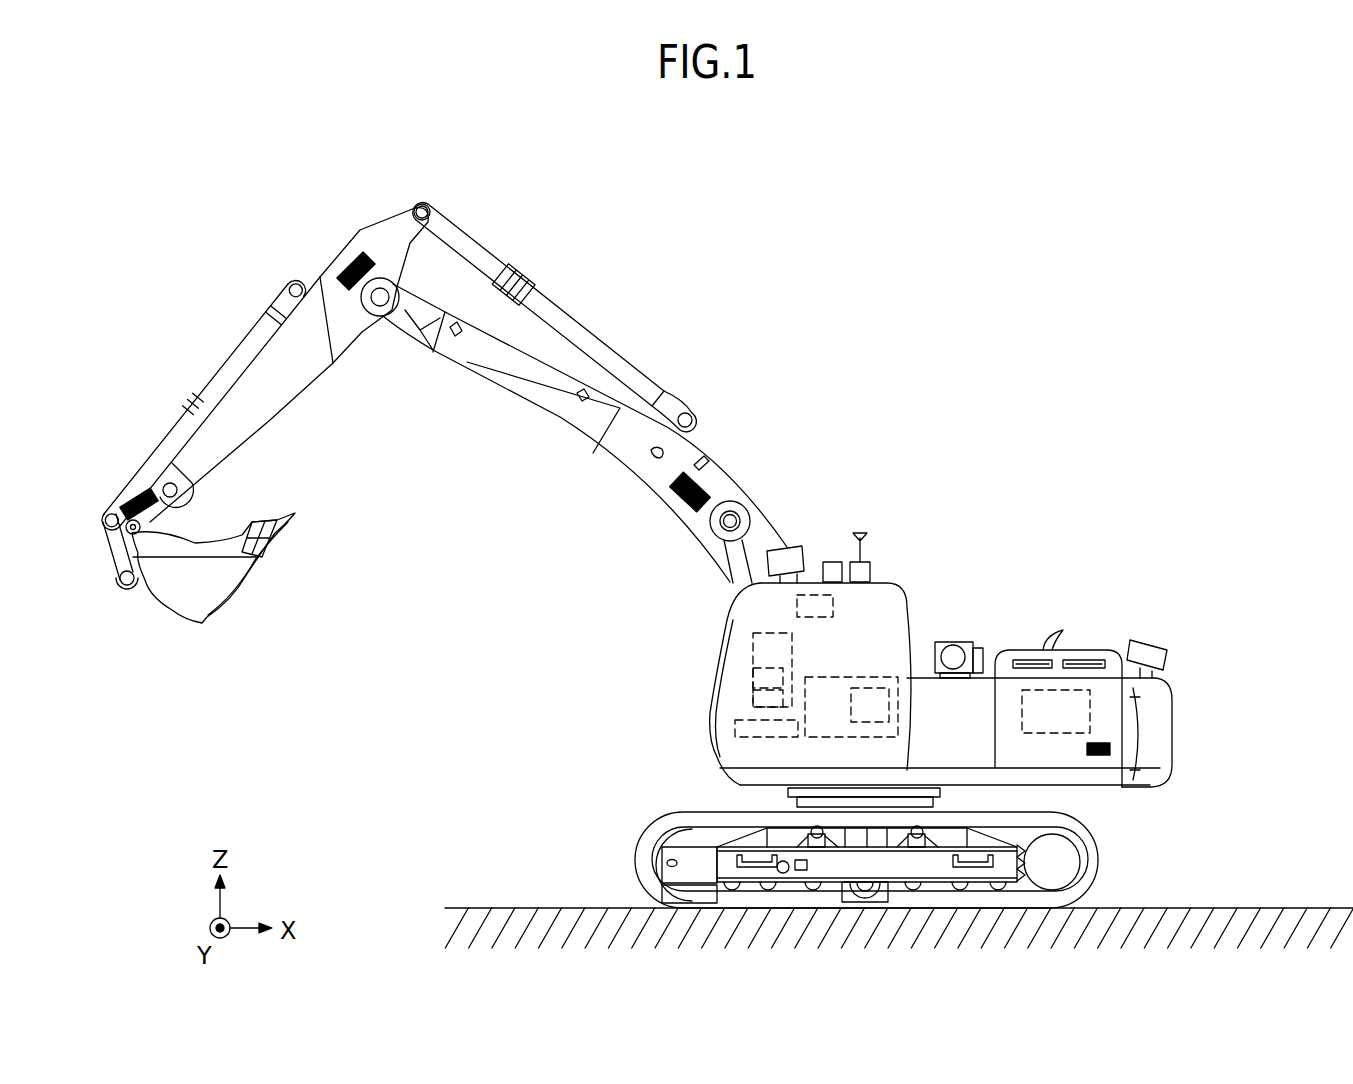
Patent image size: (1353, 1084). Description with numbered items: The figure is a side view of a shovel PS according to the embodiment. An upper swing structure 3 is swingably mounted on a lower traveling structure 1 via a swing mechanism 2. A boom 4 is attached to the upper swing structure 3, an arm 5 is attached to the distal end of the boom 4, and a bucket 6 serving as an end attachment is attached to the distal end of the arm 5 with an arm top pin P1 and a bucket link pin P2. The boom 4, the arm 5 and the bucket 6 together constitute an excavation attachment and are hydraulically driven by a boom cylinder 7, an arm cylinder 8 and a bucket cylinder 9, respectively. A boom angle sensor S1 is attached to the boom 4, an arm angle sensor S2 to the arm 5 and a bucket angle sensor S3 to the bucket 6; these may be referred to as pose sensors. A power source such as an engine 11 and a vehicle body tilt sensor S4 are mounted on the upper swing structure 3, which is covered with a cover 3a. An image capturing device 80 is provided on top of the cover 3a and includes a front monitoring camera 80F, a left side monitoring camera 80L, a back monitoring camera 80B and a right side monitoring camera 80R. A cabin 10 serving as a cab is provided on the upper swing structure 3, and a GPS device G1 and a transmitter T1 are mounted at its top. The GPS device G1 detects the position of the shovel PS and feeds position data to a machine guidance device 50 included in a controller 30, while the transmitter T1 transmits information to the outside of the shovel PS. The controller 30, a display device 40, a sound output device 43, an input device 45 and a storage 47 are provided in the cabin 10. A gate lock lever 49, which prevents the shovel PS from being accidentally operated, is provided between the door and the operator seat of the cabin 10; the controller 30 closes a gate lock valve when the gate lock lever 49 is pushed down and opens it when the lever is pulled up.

The lower traveling structure 1 is at (635, 858).
The swing mechanism 2 is at (945, 800).
The upper swing structure 3 is at (929, 613).
The cover 3a is at (1157, 697).
The boom 4 is at (628, 472).
The arm 5 is at (297, 378).
The bucket 6 is at (172, 598).
The boom cylinder 7 is at (740, 560).
The arm cylinder 8 is at (618, 358).
The bucket cylinder 9 is at (232, 363).
The cabin 10 is at (887, 578).
The engine 11 is at (1090, 717).
The controller 30 is at (833, 735).
The display device 40 is at (753, 653).
The sound output device 43 is at (813, 593).
The input device 45 is at (753, 675).
The storage 47 is at (753, 695).
The gate lock lever 49 is at (735, 725).
The machine guidance device 50 is at (870, 677).
The image capturing device 80 is at (1157, 570).
The front monitoring camera 80F is at (780, 547).
The back monitoring camera 80B is at (1150, 640).
The left side monitoring camera 80L is at (980, 647).
The right side monitoring camera 80R is at (953, 642).
The boom angle sensor S1 is at (700, 480).
The arm angle sensor S2 is at (343, 262).
The bucket angle sensor S3 is at (133, 493).
The vehicle body tilt sensor S4 is at (1110, 749).
The transmitter T1 is at (833, 560).
The GPS device (GNSS receiver) G1 is at (868, 556).
The arm top pin P1 is at (130, 530).
The bucket link pin P2 is at (132, 590).
The shovel PS is at (978, 187).